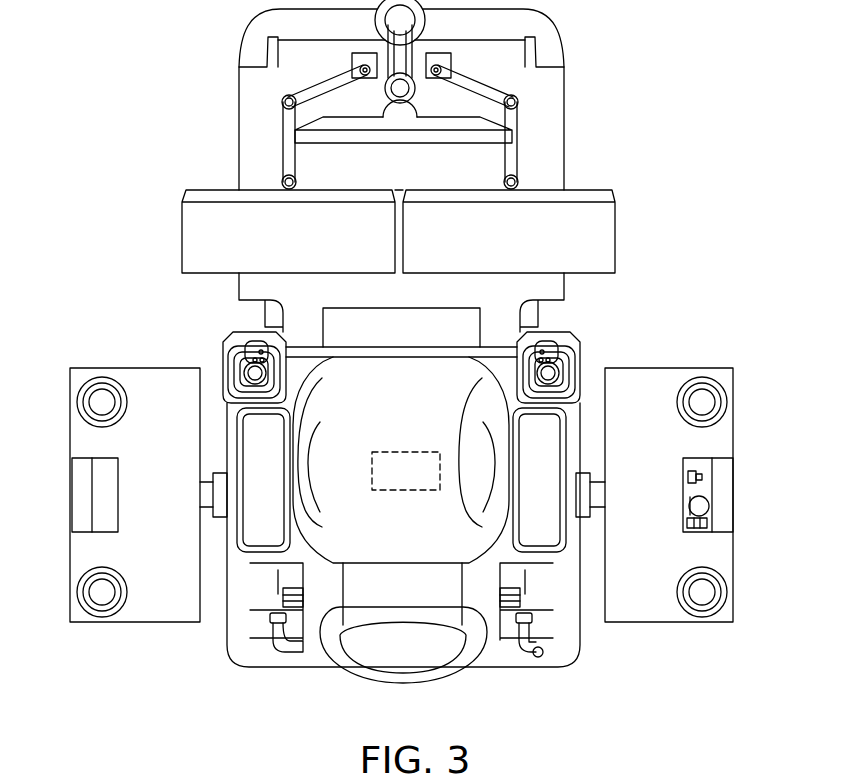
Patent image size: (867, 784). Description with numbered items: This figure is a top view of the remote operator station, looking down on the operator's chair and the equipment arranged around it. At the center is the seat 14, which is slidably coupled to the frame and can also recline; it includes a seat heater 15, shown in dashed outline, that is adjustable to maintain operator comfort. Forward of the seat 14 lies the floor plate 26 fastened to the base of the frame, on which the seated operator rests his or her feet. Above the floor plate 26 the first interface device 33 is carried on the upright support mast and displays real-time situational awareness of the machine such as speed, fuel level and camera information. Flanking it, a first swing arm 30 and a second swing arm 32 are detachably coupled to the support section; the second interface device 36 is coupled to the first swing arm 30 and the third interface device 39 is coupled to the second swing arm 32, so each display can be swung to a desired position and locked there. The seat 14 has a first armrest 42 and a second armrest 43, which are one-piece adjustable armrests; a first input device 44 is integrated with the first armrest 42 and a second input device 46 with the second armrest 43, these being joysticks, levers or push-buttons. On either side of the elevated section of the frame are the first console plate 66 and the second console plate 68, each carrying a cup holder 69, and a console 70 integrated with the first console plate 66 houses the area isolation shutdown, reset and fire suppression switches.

The seat 14 is at (413, 548).
The seat heater 15 is at (396, 452).
The floor plate 26 is at (263, 165).
The first swing arm 30 is at (283, 118).
The second swing arm 32 is at (538, 168).
The first interface device 33 is at (495, 140).
The second interface device 36 is at (190, 193).
The third interface device 39 is at (608, 198).
The first armrest 42 is at (540, 525).
The second armrest 43 is at (260, 533).
The first input device 44 is at (543, 343).
The second input device 46 is at (258, 343).
The first console plate 66 is at (650, 380).
The second console plate 68 is at (135, 375).
The cup holder 69 is at (102, 402).
The console 70 is at (720, 493).